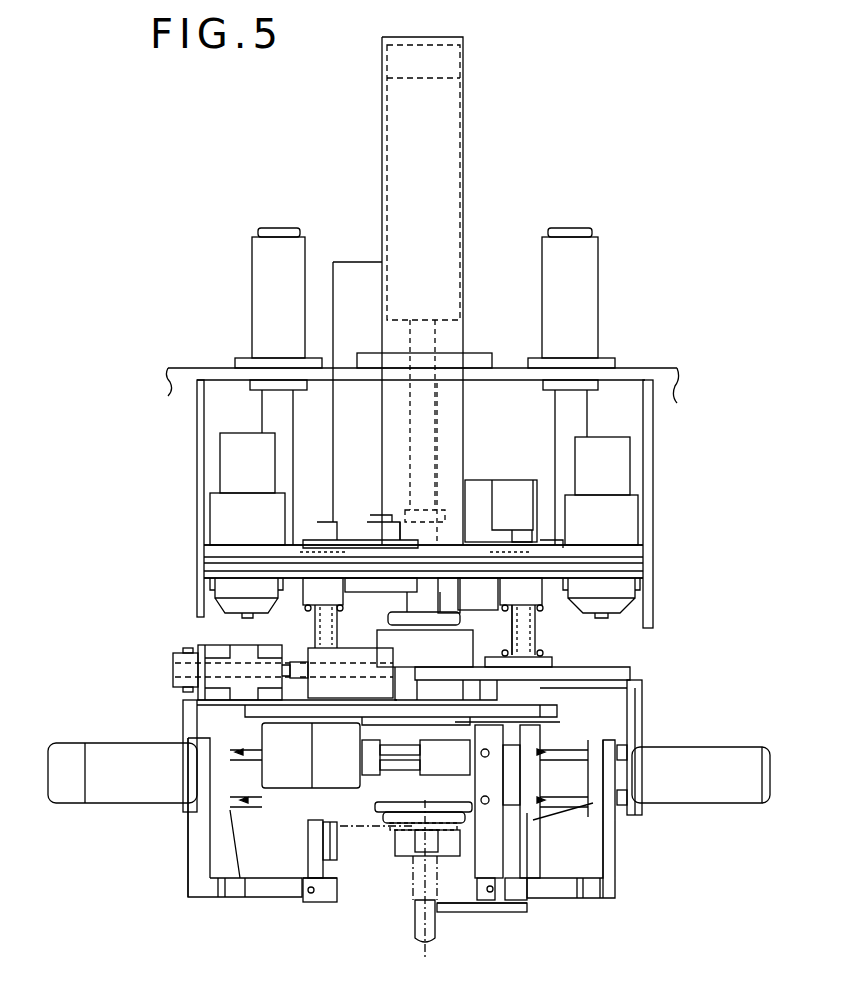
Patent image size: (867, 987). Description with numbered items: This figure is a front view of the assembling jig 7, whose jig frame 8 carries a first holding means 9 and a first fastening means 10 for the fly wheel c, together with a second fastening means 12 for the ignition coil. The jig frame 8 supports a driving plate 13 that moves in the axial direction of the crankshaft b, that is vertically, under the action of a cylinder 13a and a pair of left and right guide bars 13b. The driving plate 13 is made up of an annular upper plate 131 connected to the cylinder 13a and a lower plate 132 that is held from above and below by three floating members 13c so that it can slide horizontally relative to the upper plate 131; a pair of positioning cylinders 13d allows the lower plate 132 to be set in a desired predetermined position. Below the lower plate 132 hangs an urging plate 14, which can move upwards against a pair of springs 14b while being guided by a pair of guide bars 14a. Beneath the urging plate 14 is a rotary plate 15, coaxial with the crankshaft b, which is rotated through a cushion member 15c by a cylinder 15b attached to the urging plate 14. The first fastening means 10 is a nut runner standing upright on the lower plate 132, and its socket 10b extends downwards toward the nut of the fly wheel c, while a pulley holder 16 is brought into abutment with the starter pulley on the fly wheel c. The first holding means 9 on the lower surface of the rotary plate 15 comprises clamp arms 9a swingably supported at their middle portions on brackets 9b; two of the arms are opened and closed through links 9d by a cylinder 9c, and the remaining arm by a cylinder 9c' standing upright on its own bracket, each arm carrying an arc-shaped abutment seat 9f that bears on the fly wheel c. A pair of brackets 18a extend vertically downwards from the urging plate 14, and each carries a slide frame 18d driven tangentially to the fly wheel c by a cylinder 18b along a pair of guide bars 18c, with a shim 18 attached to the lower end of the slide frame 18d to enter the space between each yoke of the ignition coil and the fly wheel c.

The assembling jig 7 is at (480, 230).
The jig frame 8 is at (653, 463).
The first holding means 9 is at (393, 901).
The clamp arm 9a is at (335, 855).
The bracket 9b is at (540, 803).
The cylinder 9c is at (311, 785).
The cylinder 9c' is at (514, 497).
The link 9d is at (437, 760).
The abutment seat 9f is at (315, 902).
The first fastening means 10 is at (471, 438).
The socket 10b is at (452, 913).
The second fastening means 12 is at (348, 268).
The driving plate 13 is at (205, 563).
The upper plate 131 is at (218, 551).
The lower plate 132 is at (218, 573).
The cylinder 13a is at (463, 165).
The guide bar 13b is at (268, 403).
The floating member 13c is at (400, 530).
The positioning cylinder 13d is at (220, 493).
The urging plate 14 is at (630, 668).
The guide bar 14a is at (318, 634).
The spring 14b is at (345, 642).
The rotary plate 15 is at (557, 708).
The cylinder 15b is at (235, 653).
The cushion member 15c is at (395, 658).
The pulley holder 16 is at (340, 840).
The shim 18 is at (285, 893).
The bracket 18a is at (185, 715).
The cylinder 18b is at (110, 750).
The guide bar 18c is at (238, 800).
The slide frame 18d is at (215, 843).
The crankshaft b is at (415, 935).
The fly wheel c is at (508, 855).